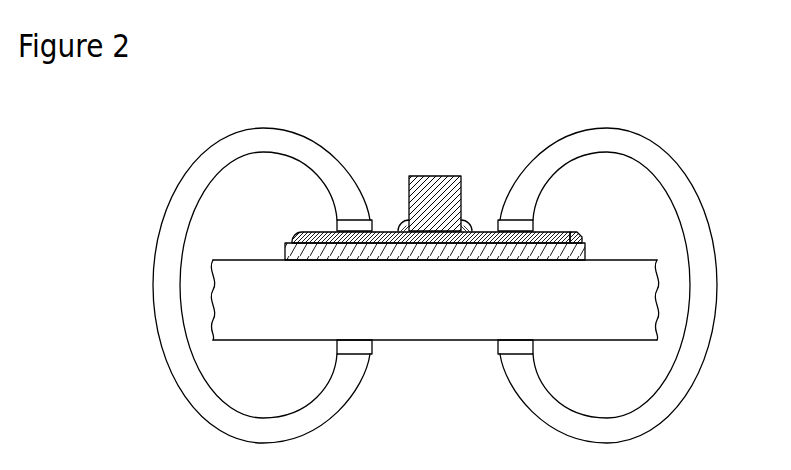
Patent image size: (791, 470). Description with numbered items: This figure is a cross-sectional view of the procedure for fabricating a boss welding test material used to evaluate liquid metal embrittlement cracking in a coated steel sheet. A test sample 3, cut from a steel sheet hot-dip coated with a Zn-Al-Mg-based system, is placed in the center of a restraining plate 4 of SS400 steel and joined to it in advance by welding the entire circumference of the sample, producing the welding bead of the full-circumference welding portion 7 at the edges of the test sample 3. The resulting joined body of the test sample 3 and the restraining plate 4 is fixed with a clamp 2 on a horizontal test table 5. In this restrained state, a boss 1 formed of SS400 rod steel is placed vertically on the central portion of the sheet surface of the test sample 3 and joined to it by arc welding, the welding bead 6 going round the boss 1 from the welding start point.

The boss 1 is at (447, 175).
The clamp 2 is at (235, 140).
The test sample 3 is at (388, 229).
The restraining plate 4 is at (279, 251).
The test table 5 is at (252, 258).
The welding bead 6 is at (473, 229).
The welding bead of full-circumference welding portion of test sample 7 is at (575, 233).